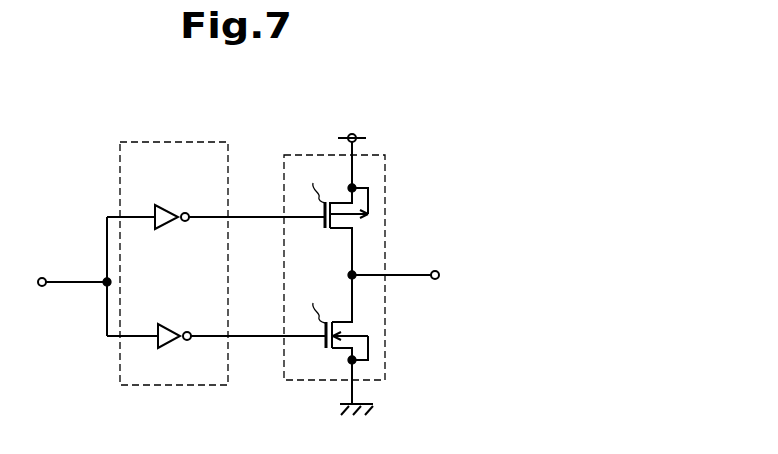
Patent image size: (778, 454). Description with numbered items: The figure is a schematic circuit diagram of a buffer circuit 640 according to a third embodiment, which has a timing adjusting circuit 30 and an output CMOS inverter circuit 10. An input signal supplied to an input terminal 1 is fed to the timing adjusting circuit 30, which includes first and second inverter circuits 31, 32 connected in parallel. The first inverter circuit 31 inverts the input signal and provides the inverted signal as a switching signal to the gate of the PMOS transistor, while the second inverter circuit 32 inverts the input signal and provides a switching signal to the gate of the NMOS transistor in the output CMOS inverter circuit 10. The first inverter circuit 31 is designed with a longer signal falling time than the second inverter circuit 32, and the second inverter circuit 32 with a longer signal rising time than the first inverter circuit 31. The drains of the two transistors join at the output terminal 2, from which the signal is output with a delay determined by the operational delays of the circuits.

The input terminal 1 is at (47, 270).
The output terminal 2 is at (435, 270).
The output CMOS inverter circuit 10 is at (362, 153).
The timing adjusting circuit 30 is at (193, 142).
The first inverter circuit 31 is at (172, 206).
The second inverter circuit 32 is at (173, 325).
The buffer circuit 640 is at (476, 114).